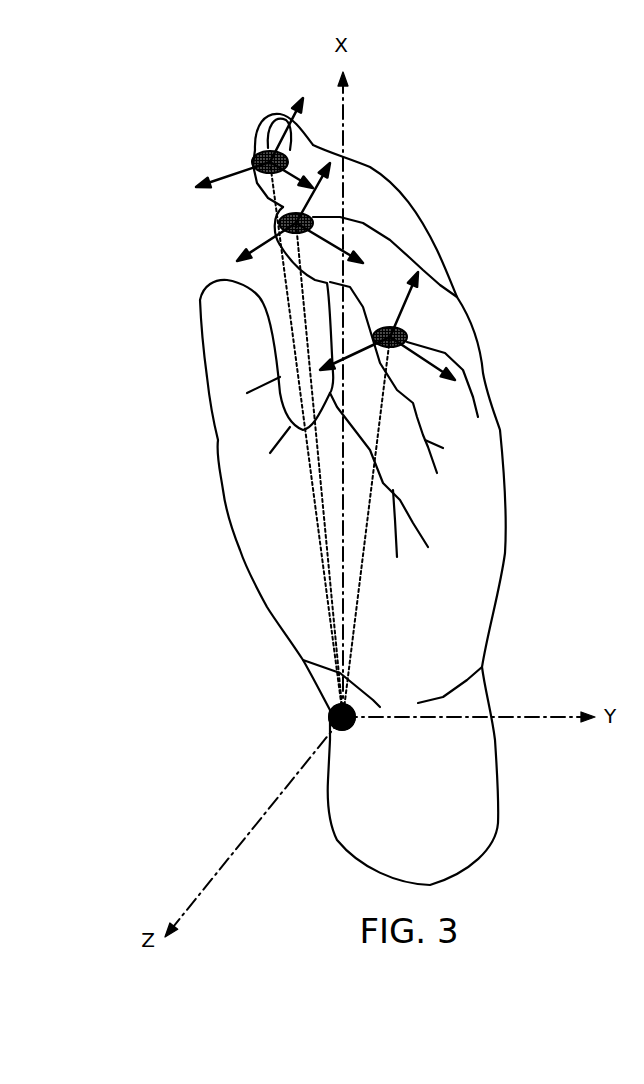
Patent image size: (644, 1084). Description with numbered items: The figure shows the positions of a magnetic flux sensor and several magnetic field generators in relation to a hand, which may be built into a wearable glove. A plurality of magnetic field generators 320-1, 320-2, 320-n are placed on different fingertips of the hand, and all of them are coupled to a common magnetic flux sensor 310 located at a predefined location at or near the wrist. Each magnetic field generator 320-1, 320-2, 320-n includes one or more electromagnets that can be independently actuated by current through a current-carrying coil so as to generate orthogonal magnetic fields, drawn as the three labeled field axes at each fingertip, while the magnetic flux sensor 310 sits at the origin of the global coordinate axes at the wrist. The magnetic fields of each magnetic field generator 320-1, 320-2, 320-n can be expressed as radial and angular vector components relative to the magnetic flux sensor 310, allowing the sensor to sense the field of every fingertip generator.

The magnetic field generator 320-1 is at (265, 147).
The magnetic field generator 320-2 is at (313, 210).
The magnetic field generator 320-n is at (408, 329).
The magnetic flux sensor 310 is at (303, 735).